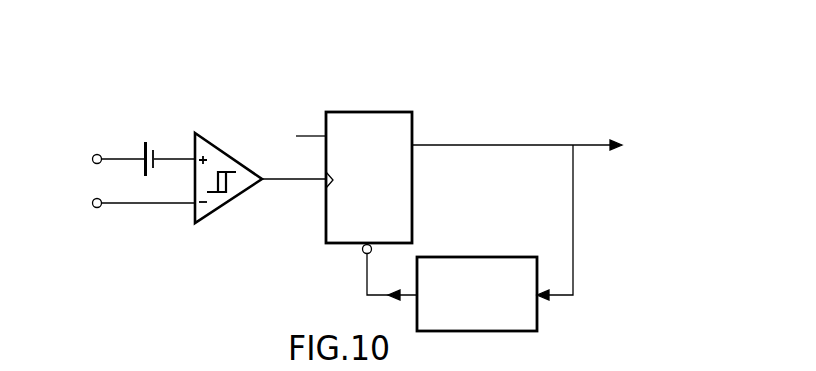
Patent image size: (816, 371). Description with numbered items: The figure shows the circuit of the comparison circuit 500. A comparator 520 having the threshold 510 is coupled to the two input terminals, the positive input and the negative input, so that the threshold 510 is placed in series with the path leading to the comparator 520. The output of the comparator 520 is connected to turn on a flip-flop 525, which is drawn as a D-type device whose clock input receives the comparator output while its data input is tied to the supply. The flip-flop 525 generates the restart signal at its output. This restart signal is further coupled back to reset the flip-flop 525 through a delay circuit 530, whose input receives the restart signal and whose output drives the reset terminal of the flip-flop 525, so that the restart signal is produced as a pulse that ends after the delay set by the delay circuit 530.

The comparison circuit 500 is at (686, 44).
The threshold 510 is at (149, 141).
The comparator 520 is at (232, 203).
The flip-flop 525 is at (347, 111).
The delay circuit 530 is at (445, 256).